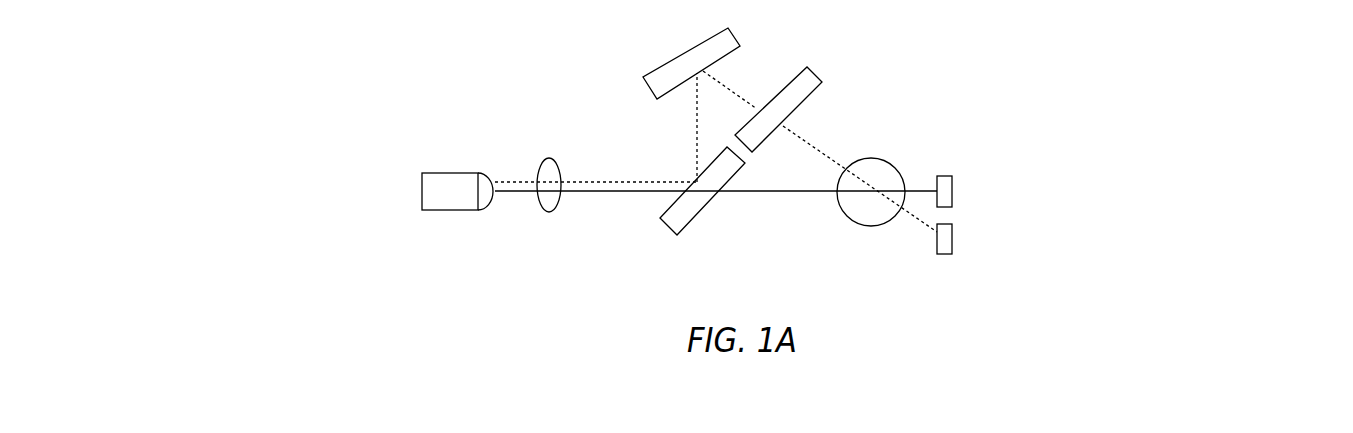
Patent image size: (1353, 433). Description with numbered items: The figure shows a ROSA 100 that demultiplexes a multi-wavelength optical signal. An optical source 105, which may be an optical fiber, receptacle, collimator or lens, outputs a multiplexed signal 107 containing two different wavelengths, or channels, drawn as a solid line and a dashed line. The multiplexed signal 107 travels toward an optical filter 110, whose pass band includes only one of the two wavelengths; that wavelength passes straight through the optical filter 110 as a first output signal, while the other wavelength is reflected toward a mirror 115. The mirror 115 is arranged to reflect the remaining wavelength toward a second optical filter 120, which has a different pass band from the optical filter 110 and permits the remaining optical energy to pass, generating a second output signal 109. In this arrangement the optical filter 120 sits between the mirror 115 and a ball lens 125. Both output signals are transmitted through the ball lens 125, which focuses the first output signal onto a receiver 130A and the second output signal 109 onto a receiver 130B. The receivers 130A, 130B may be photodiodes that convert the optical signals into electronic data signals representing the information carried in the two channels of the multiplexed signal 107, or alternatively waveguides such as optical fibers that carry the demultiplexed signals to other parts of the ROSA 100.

The ROSA 100 is at (400, 62).
The optical source 105 is at (453, 173).
The multiplexed signal 107 is at (548, 212).
The second output signal 109 is at (812, 148).
The optical filter 110 is at (690, 222).
The mirror 115 is at (687, 52).
The optical filter 120 is at (818, 75).
The ball lens 125 is at (873, 159).
The receiver 130A is at (952, 189).
The receiver 130B is at (952, 238).